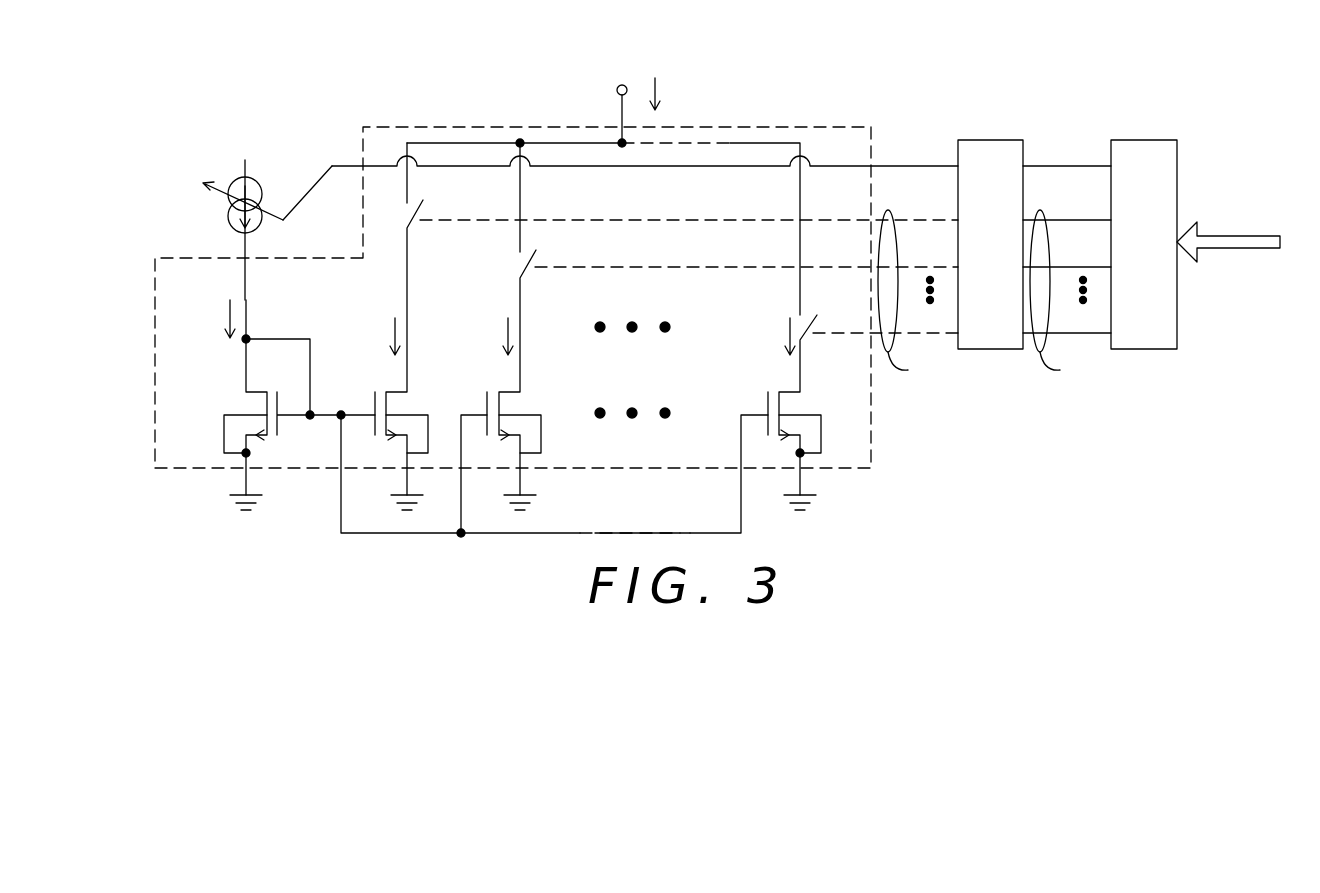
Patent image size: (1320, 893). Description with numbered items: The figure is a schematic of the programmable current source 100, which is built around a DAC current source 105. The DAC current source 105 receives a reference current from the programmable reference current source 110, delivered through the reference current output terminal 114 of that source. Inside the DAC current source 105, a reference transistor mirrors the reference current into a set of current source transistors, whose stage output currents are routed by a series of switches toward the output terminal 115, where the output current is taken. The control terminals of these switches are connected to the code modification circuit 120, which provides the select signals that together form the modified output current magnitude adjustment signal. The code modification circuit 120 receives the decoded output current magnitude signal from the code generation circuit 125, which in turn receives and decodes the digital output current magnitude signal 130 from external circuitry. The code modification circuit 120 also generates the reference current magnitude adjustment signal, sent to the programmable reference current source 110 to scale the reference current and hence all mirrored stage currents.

The programmable current source 100 is at (201, 118).
The DAC current source 105 is at (447, 126).
The programmable reference current source 110 is at (262, 187).
The reference current output terminal 114 is at (248, 275).
The output terminal 115 is at (616, 91).
The code modification circuit 120 is at (985, 140).
The code generation circuit 125 is at (1137, 140).
The digital output current magnitude signal 130 is at (1219, 235).